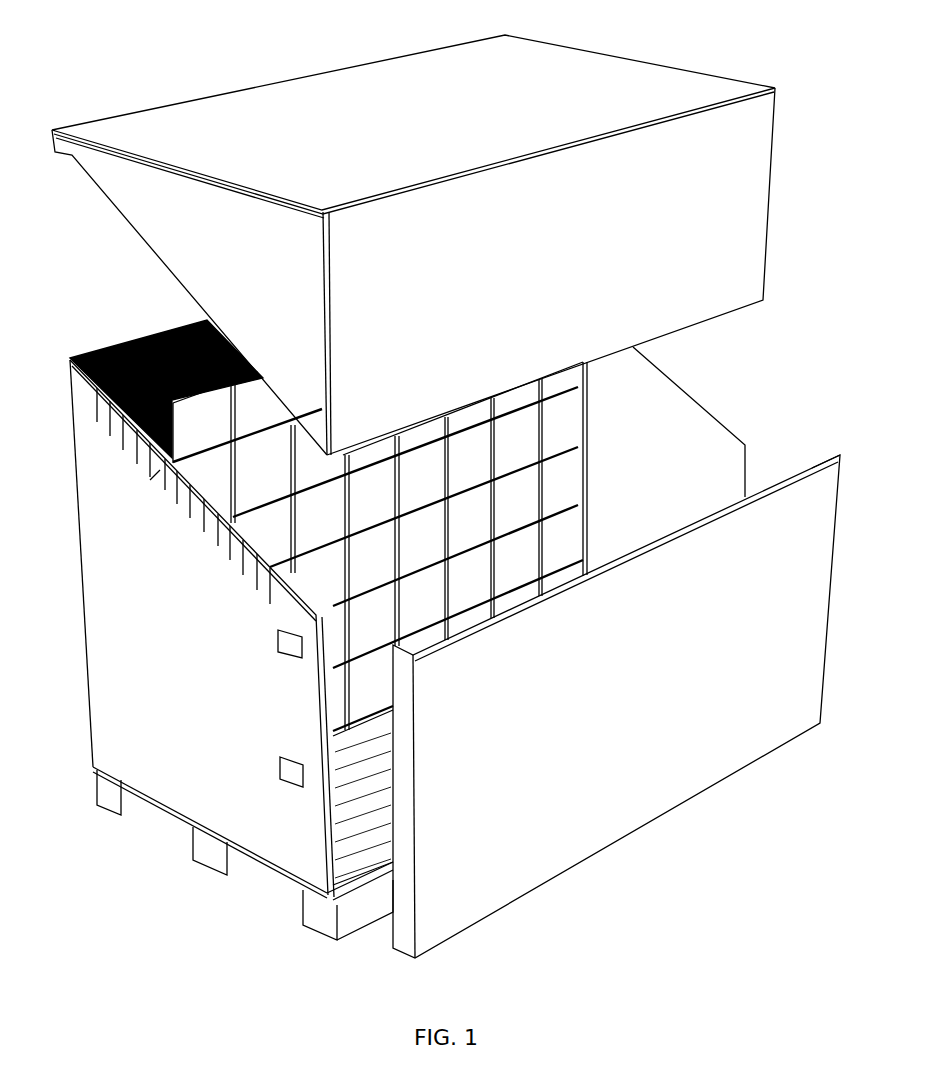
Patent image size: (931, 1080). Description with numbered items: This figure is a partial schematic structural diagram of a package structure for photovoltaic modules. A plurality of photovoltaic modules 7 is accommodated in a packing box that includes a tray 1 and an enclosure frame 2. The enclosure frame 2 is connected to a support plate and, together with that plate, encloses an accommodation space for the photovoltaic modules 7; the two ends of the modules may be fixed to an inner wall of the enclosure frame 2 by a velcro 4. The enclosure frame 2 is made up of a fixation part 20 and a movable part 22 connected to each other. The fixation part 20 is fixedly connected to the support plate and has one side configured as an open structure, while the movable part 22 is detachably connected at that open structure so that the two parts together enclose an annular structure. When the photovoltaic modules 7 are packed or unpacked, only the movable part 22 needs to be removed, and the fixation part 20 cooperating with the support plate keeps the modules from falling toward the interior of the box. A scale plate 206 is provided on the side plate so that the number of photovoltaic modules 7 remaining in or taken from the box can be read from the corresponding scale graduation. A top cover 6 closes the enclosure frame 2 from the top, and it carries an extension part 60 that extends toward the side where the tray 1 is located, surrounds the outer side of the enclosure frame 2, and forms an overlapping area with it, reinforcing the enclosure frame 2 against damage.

The tray 1 is at (217, 848).
The enclosure frame 2 is at (813, 380).
The velcro 4 is at (283, 774).
The top cover 6 is at (653, 82).
The photovoltaic module 7 is at (97, 430).
The fixation part 20 is at (700, 433).
The movable part 22 is at (805, 502).
The extension part 60 is at (740, 207).
The scale plate 206 is at (155, 485).